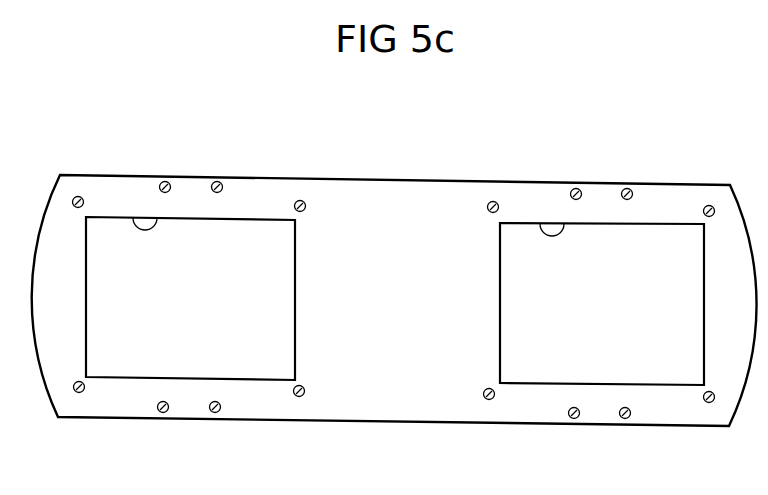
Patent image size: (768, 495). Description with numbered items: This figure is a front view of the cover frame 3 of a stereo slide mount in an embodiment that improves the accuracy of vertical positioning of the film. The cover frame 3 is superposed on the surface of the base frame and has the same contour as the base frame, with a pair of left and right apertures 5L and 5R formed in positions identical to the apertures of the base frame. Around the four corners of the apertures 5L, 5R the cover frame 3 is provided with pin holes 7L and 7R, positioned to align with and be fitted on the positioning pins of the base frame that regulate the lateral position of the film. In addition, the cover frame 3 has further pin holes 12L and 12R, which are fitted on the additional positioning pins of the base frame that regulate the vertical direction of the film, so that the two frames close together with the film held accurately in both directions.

The cover frame 3 is at (398, 160).
The left aperture 5L is at (130, 216).
The right aperture 5R is at (538, 222).
The left pin holes 7L is at (79, 196).
The right pin holes 7R is at (493, 201).
The left pin holes 12L is at (213, 182).
The right pin holes 12R is at (623, 189).